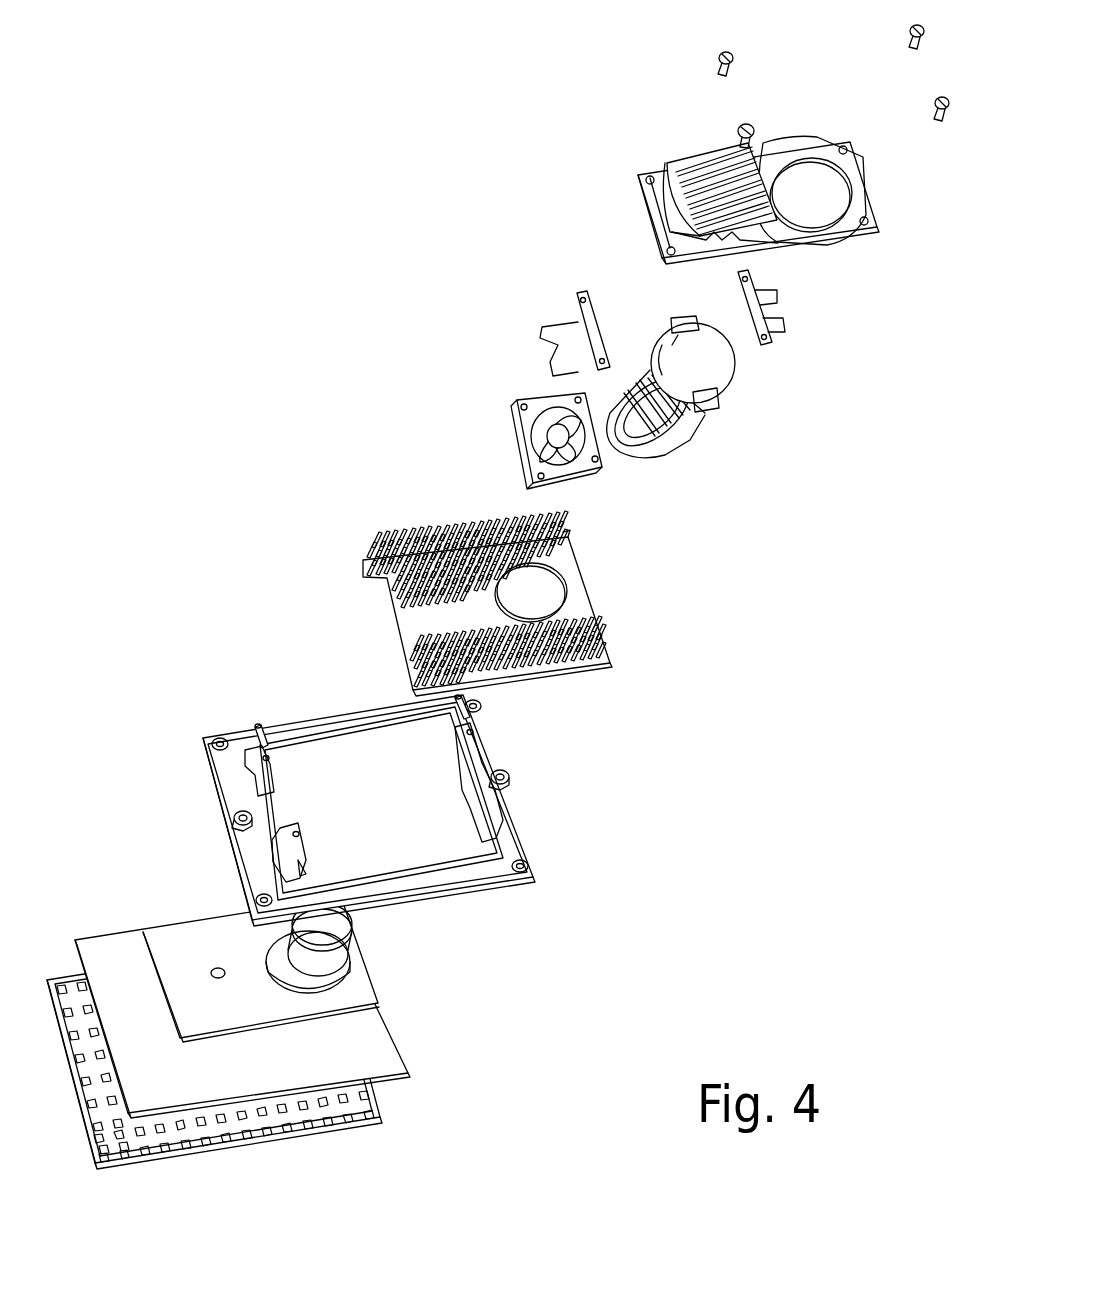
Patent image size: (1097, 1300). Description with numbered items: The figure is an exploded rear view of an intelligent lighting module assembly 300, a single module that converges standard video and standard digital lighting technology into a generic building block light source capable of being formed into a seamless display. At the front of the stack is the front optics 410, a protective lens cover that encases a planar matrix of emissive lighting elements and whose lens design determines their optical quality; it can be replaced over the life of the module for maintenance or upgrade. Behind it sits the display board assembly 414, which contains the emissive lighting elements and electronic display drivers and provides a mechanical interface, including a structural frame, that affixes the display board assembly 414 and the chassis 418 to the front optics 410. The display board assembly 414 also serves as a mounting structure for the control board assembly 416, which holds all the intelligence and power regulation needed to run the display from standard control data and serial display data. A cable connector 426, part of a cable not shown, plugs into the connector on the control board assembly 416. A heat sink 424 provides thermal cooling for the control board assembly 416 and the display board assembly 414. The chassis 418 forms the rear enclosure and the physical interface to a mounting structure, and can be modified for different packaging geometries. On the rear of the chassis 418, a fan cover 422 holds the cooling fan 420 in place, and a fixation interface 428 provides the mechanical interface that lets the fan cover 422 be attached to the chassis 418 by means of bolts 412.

The intelligent lighting module assembly 300 is at (290, 153).
The front optics 410 is at (368, 1098).
The bolts 412 is at (718, 55).
The display board assembly 414 is at (363, 1039).
The control board assembly 416 is at (188, 935).
The chassis 418 is at (517, 836).
The cooling fan 420 is at (517, 420).
The fan cover 422 is at (675, 173).
The heat sink 424 is at (383, 540).
The cable connector 426 is at (705, 375).
The fixation interface 428 is at (743, 310).